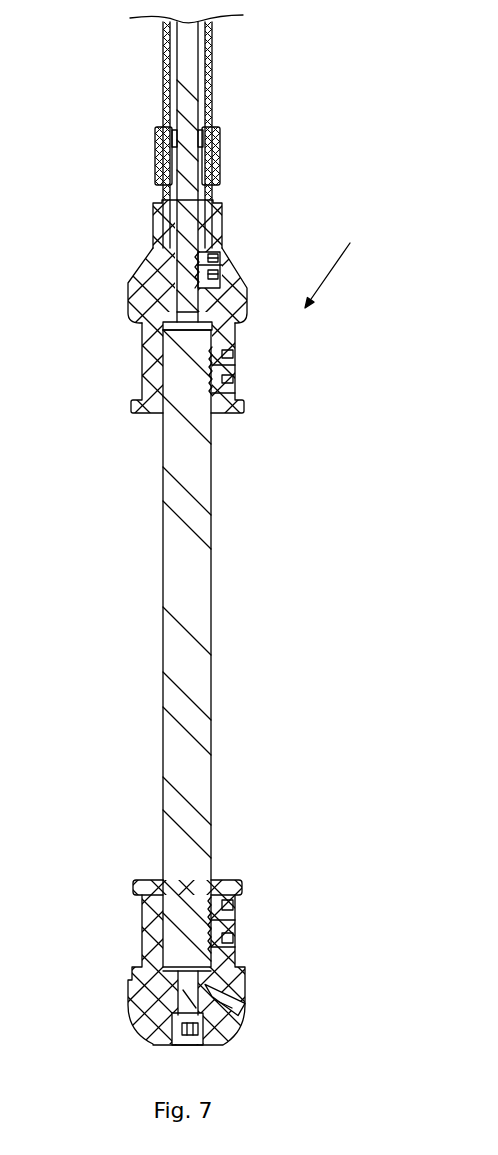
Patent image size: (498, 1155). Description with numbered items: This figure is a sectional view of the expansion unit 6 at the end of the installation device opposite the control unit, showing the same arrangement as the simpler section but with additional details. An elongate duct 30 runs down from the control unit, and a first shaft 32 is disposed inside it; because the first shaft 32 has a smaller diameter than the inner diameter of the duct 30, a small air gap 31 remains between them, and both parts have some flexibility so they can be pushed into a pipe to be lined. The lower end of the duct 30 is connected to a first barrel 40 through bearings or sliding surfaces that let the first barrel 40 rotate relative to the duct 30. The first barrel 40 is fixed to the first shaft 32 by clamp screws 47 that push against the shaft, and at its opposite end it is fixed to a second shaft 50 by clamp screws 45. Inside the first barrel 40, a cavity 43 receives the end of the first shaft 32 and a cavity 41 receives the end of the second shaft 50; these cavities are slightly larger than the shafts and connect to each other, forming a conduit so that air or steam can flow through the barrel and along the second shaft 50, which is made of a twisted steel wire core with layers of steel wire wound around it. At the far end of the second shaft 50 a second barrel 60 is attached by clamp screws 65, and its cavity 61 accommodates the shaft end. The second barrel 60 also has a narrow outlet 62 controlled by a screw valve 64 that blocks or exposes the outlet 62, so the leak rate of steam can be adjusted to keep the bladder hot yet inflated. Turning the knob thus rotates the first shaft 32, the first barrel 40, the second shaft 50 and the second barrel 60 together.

The expansion unit 6 is at (332, 264).
The elongate duct 30 is at (162, 68).
The air gap 31 is at (202, 50).
The first shaft 32 is at (190, 80).
The first barrel 40 is at (247, 290).
The cavity 41 is at (215, 415).
The cavity 43 is at (153, 267).
The clamp screws 45 is at (245, 365).
The clamp screws 47 is at (220, 257).
The second shaft 50 is at (212, 708).
The second barrel 60 is at (227, 880).
The cavity 61 is at (143, 885).
The narrow outlet 62 is at (228, 1012).
The screw valve 64 is at (183, 1042).
The clamp screws 65 is at (228, 927).